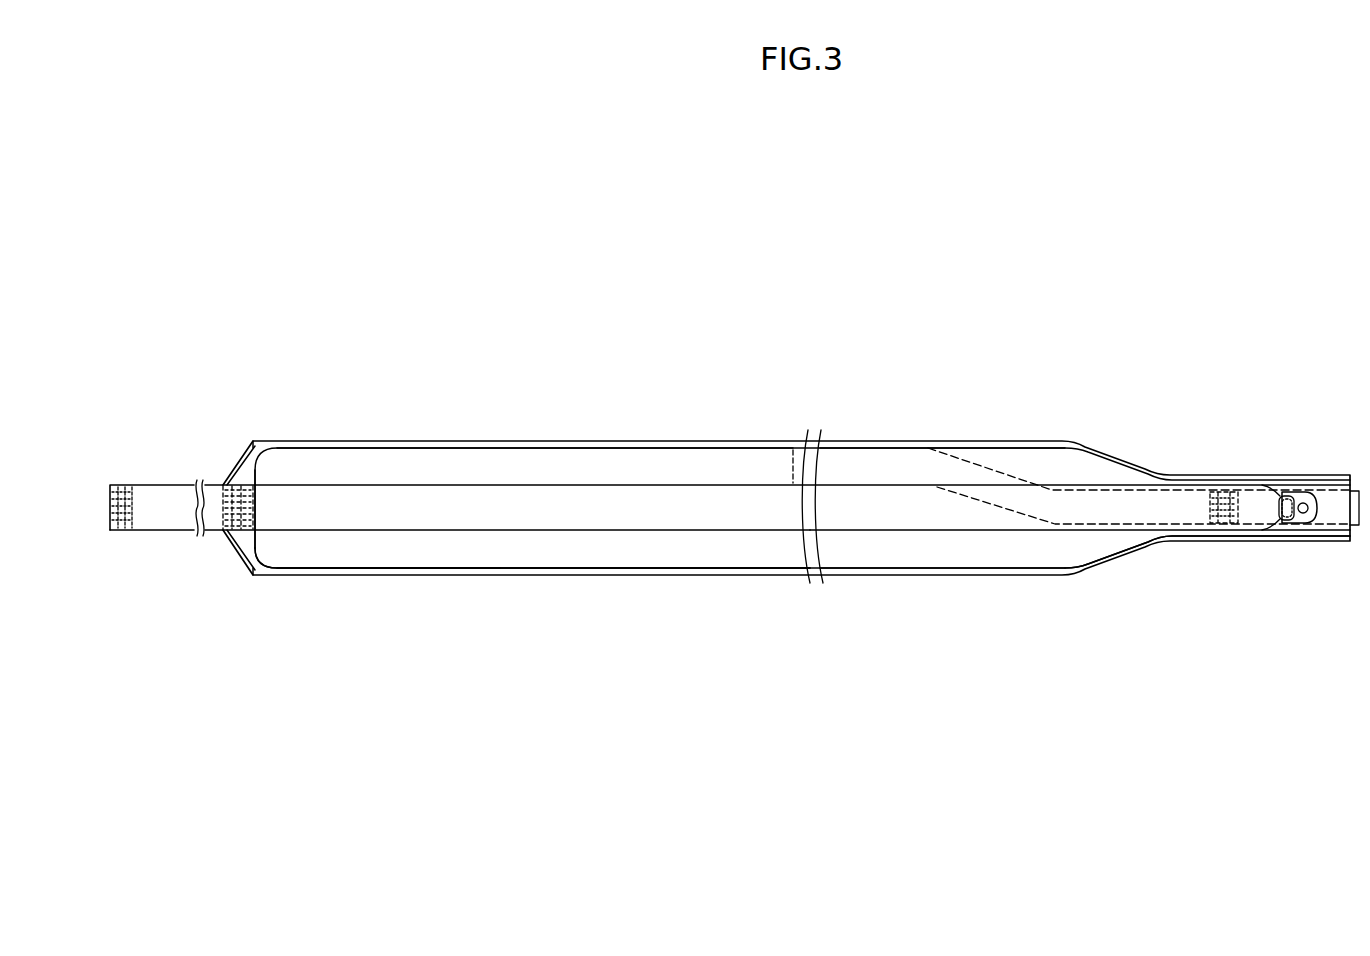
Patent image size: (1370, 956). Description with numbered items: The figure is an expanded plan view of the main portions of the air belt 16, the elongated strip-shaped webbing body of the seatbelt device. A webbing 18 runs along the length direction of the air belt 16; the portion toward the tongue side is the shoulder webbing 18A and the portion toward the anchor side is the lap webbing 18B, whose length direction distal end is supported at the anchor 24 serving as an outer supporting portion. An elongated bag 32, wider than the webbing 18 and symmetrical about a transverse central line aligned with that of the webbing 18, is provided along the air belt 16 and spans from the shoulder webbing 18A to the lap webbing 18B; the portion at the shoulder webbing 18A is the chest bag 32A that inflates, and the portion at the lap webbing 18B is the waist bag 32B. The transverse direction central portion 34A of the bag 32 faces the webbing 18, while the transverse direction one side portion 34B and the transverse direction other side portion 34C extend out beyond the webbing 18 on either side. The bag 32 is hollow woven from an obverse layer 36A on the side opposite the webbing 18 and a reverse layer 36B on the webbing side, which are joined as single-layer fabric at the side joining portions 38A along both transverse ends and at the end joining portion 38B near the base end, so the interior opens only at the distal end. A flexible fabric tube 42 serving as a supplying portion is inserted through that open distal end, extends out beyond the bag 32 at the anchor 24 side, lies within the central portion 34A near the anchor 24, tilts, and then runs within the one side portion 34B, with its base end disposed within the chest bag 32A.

The air belt 16 is at (410, 330).
The webbing 18 is at (512, 485).
The shoulder webbing 18A is at (505, 530).
The lap webbing 18B is at (970, 530).
The anchor 24 is at (1290, 490).
The bag 32 is at (373, 440).
The chest bag 32A is at (435, 575).
The waist bag 32B is at (918, 575).
The transverse direction central portion 34A is at (602, 500).
The transverse direction one side portion 34B is at (690, 460).
The transverse direction other side portion 34C is at (688, 555).
The obverse layer 36A is at (373, 558).
The reverse layer 36B is at (850, 555).
The side joining portions 38A is at (882, 441).
The end joining portion 38B is at (246, 480).
The tube 42 is at (972, 462).